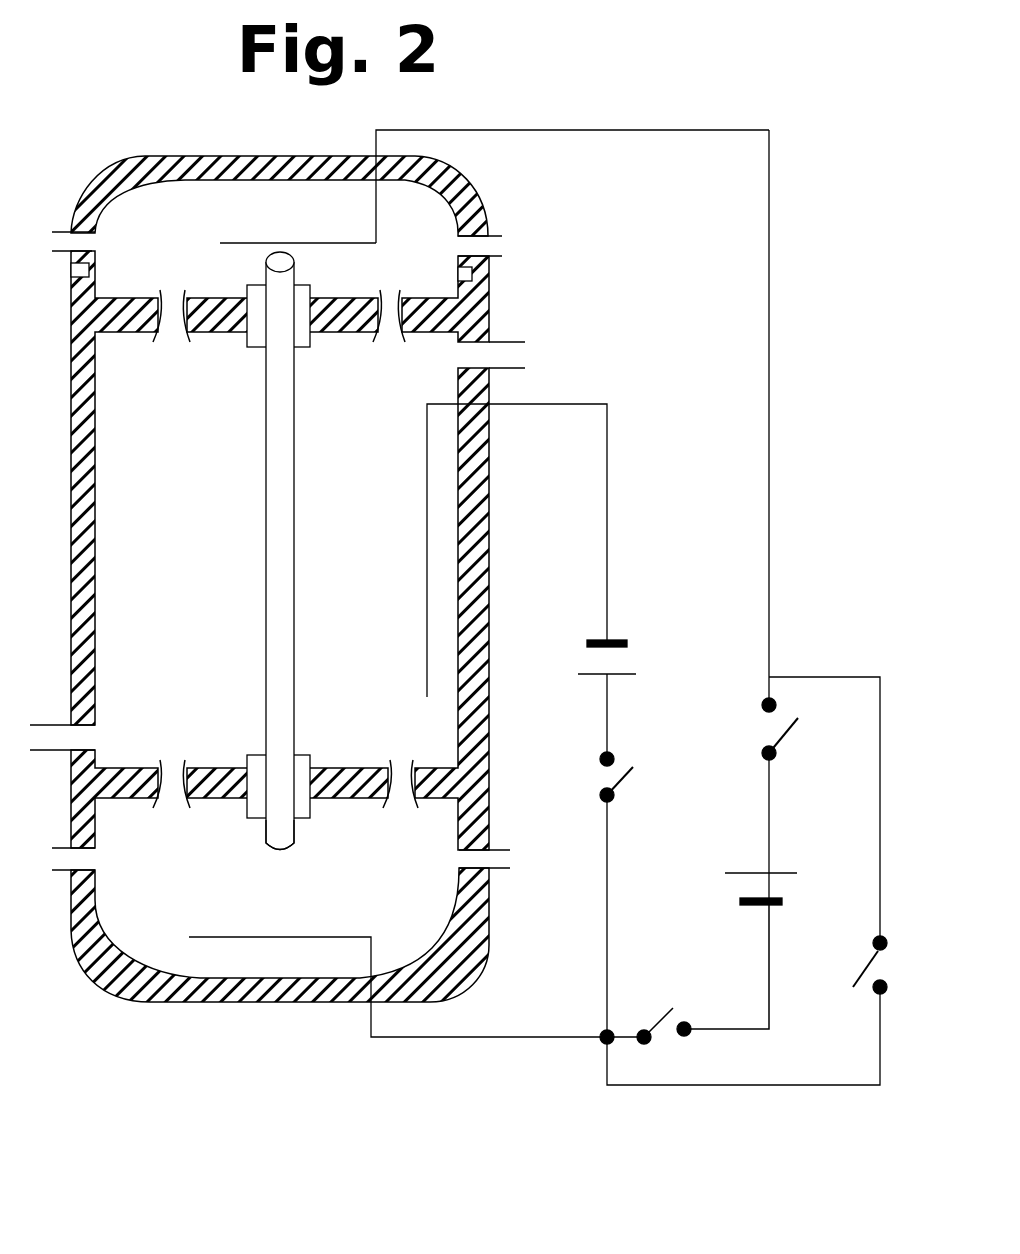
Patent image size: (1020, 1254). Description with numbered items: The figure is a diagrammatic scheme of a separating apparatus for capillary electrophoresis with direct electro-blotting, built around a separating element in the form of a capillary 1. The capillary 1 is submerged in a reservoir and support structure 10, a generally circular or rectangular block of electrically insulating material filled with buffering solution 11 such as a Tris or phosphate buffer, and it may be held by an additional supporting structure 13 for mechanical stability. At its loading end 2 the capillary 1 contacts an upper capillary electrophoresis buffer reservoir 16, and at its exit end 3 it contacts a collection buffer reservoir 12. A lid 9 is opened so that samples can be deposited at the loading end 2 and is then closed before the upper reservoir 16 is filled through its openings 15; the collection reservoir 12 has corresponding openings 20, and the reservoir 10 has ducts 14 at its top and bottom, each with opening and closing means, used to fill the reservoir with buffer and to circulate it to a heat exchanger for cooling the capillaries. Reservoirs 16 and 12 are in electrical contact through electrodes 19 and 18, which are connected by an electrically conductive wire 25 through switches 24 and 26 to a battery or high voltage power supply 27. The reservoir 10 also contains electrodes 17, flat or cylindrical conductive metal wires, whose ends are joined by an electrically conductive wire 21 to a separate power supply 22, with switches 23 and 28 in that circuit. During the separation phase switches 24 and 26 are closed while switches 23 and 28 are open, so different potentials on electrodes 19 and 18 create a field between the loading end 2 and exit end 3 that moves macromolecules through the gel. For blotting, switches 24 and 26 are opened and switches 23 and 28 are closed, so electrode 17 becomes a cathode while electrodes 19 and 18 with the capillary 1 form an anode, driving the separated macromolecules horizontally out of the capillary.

The capillary 1 is at (293, 551).
The loading end 2 is at (281, 299).
The exit end 3 is at (290, 842).
The lid 9 is at (279, 176).
The reservoir and support structure 10 is at (297, 550).
The buffering solution 11 is at (359, 632).
The collection buffer reservoir 12 is at (280, 935).
The supporting structure 13 is at (287, 773).
The ducts 14 is at (294, 568).
The openings 15 is at (283, 257).
The capillary electrophoresis buffer reservoir 16 is at (572, 198).
The electrodes 17 is at (497, 550).
The electrode 18 is at (398, 974).
The electrode 19 is at (298, 226).
The openings 20 is at (286, 874).
The electrically conductive wire 21 is at (743, 792).
The power supply 22 is at (627, 657).
The switch 23 is at (637, 777).
The switch 24 is at (684, 974).
The electrically conductive wire 25 is at (824, 536).
The switch 26 is at (788, 785).
The high voltage power supply 27 is at (776, 890).
The switch 28 is at (862, 983).